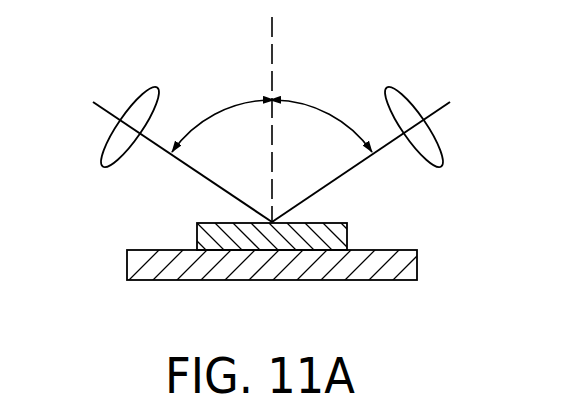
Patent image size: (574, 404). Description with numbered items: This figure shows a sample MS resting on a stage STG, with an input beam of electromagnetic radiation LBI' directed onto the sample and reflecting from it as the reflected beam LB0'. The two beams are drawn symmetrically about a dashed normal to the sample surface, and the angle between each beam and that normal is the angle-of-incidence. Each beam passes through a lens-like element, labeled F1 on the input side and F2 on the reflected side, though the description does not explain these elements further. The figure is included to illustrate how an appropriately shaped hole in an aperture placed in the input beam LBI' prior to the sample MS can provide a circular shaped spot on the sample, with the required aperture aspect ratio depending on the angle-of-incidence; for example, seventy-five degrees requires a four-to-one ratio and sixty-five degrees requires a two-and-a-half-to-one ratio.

The first lens (focusing optical system) F1 is at (405, 90).
The second lens (focusing optical system) F2 is at (138, 90).
The reflected beam LB0' is at (178, 162).
The input beam LBI' is at (361, 162).
The sample MS is at (238, 238).
The stage STG is at (362, 282).